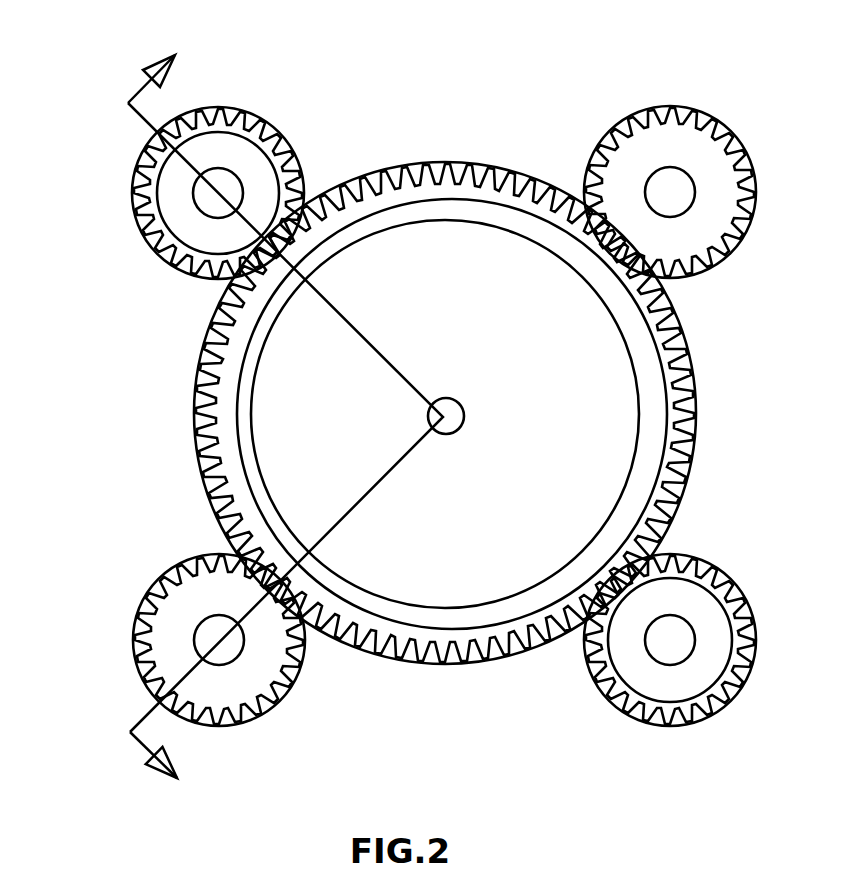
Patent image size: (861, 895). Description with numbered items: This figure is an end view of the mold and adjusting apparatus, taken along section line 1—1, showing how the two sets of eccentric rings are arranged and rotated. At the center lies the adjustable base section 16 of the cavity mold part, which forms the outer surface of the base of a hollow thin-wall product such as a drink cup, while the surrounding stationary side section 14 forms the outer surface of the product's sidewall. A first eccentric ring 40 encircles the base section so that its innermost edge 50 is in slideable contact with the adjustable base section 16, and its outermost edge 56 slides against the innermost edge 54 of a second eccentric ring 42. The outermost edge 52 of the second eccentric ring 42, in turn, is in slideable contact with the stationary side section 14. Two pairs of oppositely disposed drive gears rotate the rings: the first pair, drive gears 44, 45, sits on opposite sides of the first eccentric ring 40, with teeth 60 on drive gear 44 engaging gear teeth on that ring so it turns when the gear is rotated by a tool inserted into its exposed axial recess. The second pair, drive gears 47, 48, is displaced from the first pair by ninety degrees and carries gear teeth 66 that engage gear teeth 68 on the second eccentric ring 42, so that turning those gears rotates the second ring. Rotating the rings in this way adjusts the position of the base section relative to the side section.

The section line 1— 1 is at (285, 417).
The stationary side section 14 is at (63, 416).
The adjustable base section 16 is at (361, 480).
The first eccentric ring 40 is at (260, 320).
The second eccentric ring 42 is at (240, 498).
The drive gear 44 is at (172, 168).
The drive gear 45 is at (713, 613).
The drive gear 47 is at (174, 671).
The drive gear 48 is at (705, 148).
The innermost edge of the first eccentric ring 50 is at (617, 507).
The outermost edge of the second eccentric ring 52 is at (205, 435).
The innermost edge of the second eccentric ring 54 is at (557, 600).
The outermost edge of the first eccentric ring 56 is at (508, 622).
The teeth 60 is at (138, 158).
The gear teeth 66 is at (135, 610).
The gear teeth 68 is at (422, 665).